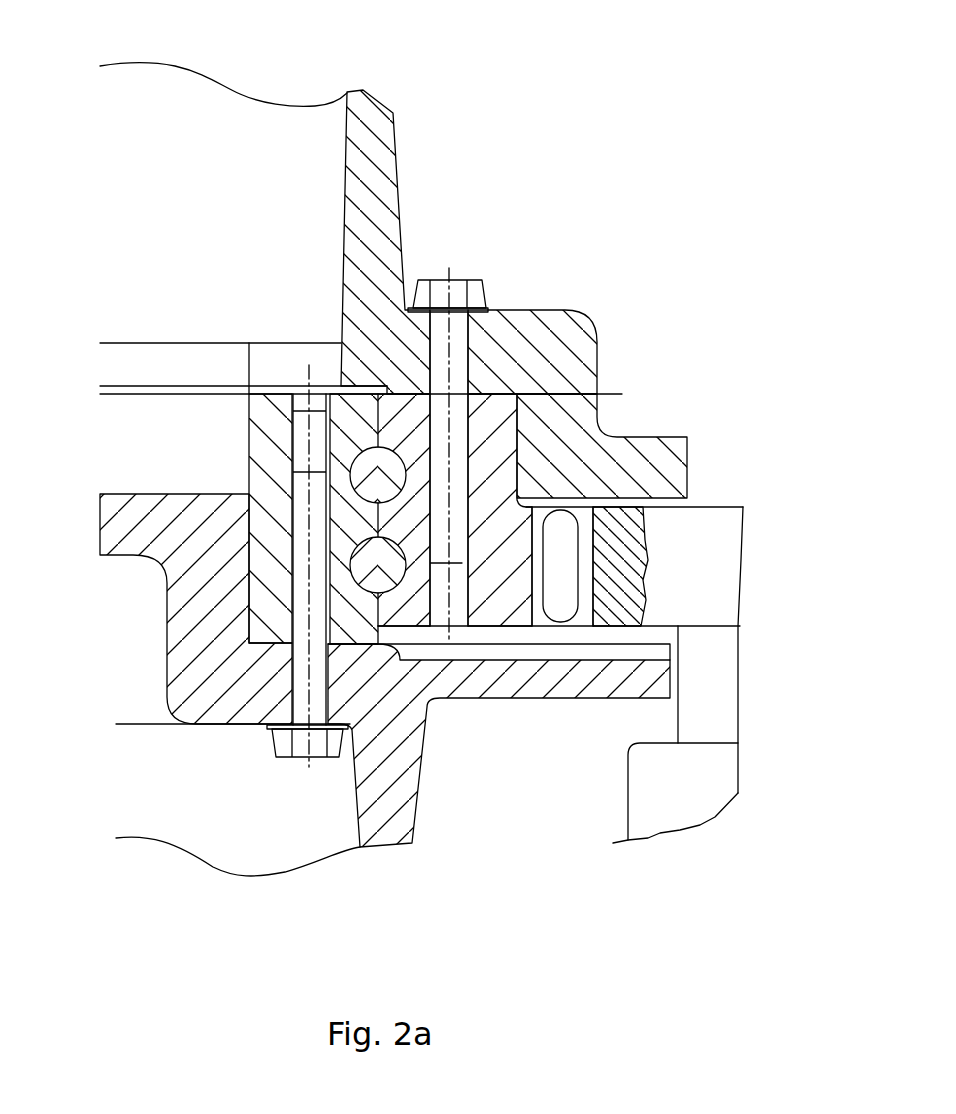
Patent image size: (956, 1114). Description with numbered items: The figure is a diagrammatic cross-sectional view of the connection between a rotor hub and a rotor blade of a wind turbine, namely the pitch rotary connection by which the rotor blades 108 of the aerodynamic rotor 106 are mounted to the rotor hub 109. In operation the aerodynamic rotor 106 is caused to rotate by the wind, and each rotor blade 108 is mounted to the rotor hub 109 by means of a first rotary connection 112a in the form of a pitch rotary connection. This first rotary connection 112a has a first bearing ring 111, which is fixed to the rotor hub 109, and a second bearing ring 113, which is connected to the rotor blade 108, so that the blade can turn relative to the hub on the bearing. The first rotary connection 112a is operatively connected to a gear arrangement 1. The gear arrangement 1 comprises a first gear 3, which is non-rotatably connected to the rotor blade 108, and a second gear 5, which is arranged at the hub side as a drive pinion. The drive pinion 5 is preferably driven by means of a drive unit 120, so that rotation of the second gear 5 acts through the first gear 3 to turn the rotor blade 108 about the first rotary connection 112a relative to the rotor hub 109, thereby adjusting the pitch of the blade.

The gear arrangement 1 is at (533, 628).
The first gear 3 is at (497, 605).
The second gear 5 is at (617, 563).
The aerodynamic rotor 106 is at (668, 222).
The rotor blade 108 is at (372, 170).
The rotor hub 109 is at (391, 777).
The first bearing ring 111 is at (270, 535).
The first rotary connection 112a is at (347, 383).
The second bearing ring 113 is at (503, 437).
The drive unit 120 is at (685, 793).